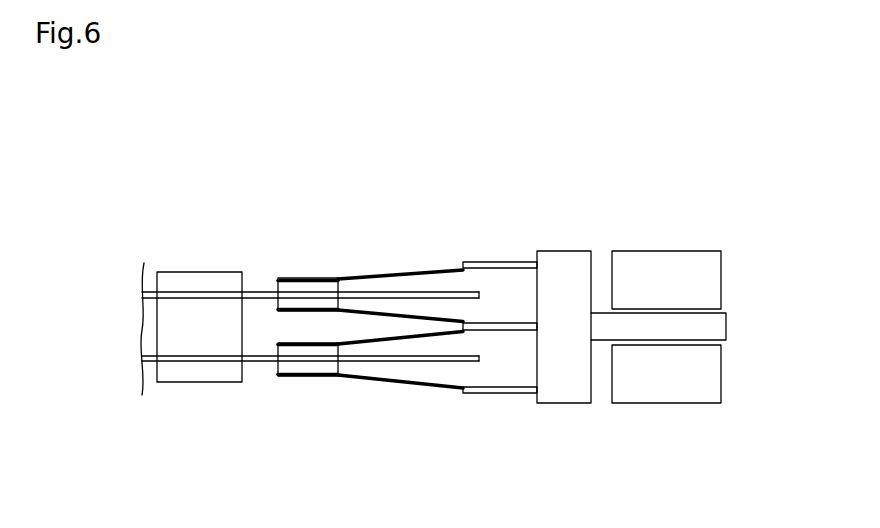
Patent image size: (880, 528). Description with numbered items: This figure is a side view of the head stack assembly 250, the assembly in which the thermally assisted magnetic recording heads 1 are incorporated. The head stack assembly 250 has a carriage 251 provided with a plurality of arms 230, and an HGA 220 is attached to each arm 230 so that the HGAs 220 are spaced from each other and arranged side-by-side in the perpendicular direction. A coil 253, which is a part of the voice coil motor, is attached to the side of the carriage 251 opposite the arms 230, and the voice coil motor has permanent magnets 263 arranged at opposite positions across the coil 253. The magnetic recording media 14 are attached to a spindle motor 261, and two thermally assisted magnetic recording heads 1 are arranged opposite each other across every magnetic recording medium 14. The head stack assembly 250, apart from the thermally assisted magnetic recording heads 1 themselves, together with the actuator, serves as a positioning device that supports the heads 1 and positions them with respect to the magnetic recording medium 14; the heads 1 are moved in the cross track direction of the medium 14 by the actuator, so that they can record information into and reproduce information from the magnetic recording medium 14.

The thermally assisted magnetic recording head 1 is at (277, 287).
The magnetic recording medium 14 is at (252, 292).
The HGA 220 is at (393, 268).
The arm 230 is at (477, 258).
The head stack assembly 250 is at (670, 328).
The carriage 251 is at (567, 397).
The coil 253 is at (715, 329).
The spindle motor 261 is at (181, 277).
The permanent magnet 263 is at (660, 250).